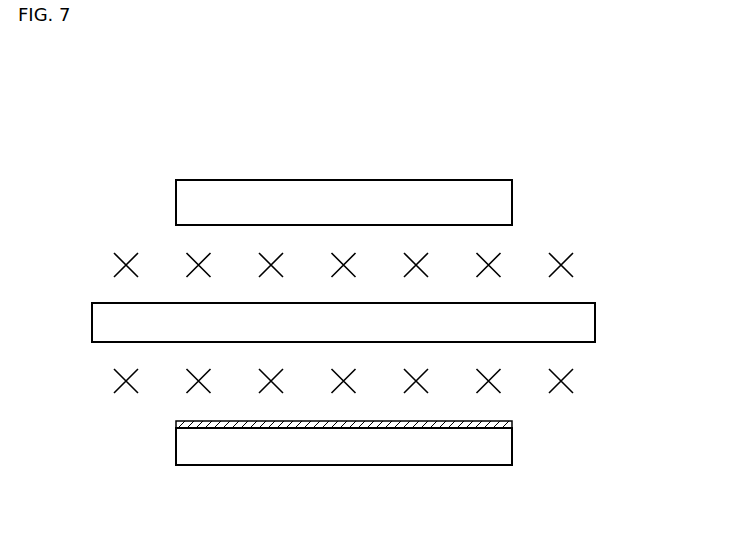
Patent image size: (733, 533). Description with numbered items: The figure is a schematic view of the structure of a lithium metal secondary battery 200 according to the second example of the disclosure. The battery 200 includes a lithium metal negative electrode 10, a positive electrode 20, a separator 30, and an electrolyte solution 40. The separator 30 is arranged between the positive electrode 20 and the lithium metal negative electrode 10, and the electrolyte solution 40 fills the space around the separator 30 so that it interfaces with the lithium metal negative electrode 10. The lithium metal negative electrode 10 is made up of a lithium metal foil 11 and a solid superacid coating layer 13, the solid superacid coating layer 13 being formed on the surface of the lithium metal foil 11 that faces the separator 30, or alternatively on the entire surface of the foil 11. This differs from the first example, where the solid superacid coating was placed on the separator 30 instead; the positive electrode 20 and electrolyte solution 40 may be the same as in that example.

The lithium metal secondary battery 200 is at (441, 135).
The positive electrode 20 is at (500, 198).
The separator 30 is at (100, 324).
The electrolyte solution 40 is at (573, 268).
The lithium metal negative electrode 10 is at (409, 442).
The solid superacid coating layer 13 is at (513, 422).
The lithium metal foil 11 is at (513, 445).